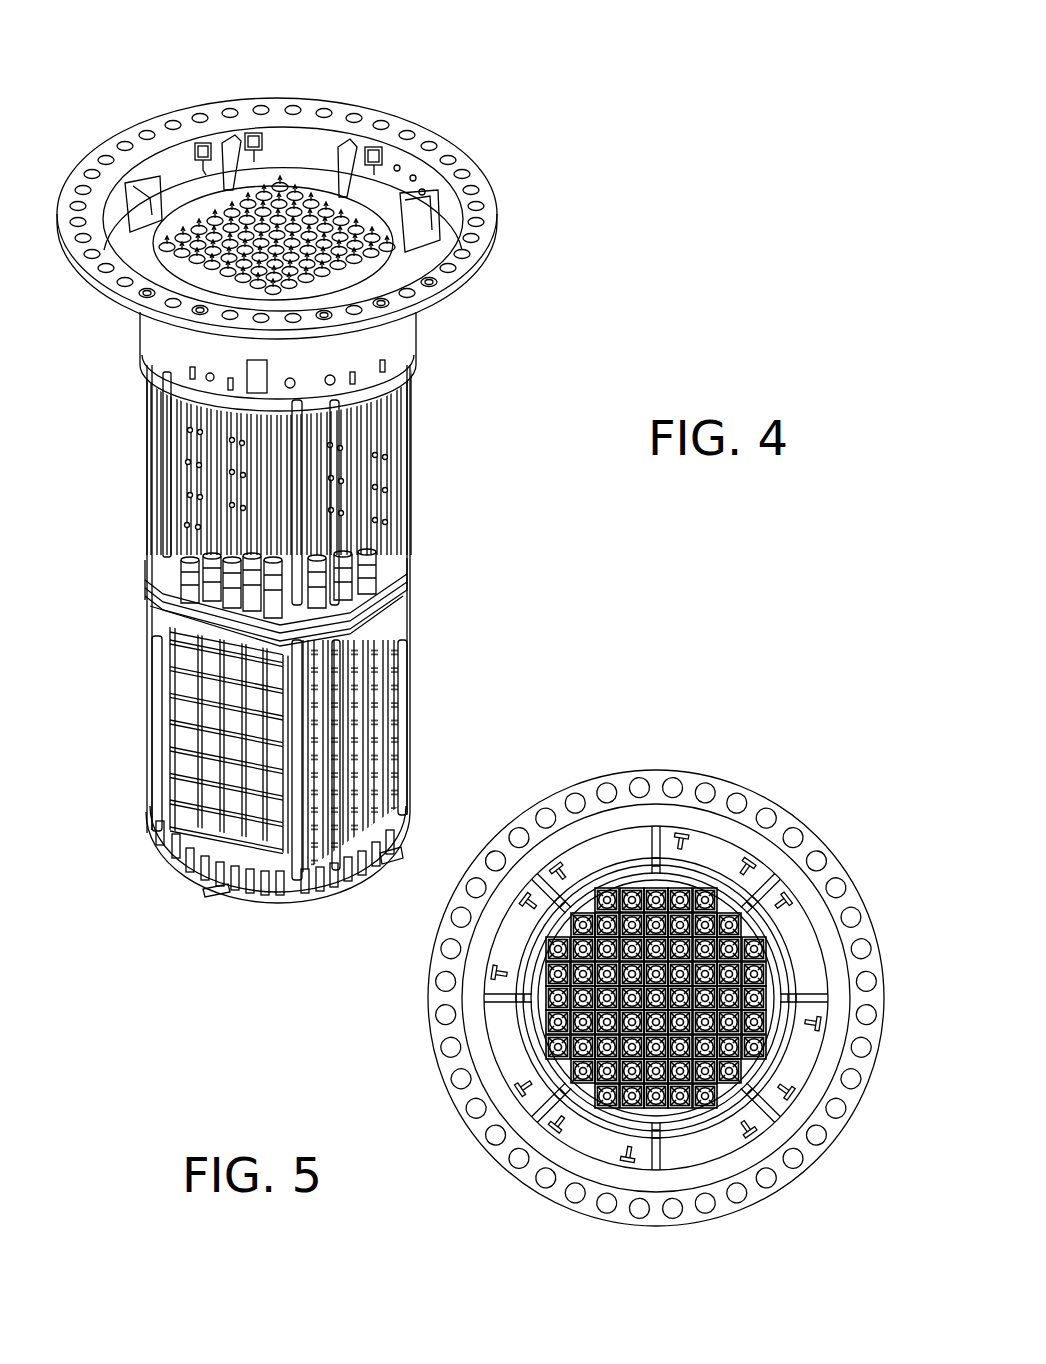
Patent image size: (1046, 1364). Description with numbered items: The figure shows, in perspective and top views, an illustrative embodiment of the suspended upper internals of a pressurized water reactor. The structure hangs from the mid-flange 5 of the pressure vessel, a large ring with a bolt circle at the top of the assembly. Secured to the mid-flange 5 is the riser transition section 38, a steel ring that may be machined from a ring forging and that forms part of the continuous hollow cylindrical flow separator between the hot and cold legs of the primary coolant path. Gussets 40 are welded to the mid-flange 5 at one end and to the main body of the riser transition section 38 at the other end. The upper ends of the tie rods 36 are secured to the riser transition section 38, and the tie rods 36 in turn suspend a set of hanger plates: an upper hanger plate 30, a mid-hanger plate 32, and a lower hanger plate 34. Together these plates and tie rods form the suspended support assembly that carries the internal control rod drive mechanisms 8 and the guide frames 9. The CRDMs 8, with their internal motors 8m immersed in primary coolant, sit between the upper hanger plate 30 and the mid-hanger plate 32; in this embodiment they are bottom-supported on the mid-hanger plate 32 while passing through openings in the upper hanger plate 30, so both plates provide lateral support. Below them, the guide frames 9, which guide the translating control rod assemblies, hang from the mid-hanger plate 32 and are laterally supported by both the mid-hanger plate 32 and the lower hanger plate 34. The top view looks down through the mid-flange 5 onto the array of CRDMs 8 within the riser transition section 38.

In FIG. 4, the mid-flange 5 is at (478, 170).
In FIG. 5, the mid-flange 5 is at (841, 864).
In FIG. 4, the internal control rod drive mechanism 8 is at (372, 462).
In FIG. 5, the internal control rod drive mechanism 8 is at (557, 1037).
In FIG. 4, the internal motor 8m is at (403, 578).
In FIG. 4, the guide frame 9 is at (393, 730).
In FIG. 4, the upper hanger plate 30 is at (347, 401).
In FIG. 5, the upper hanger plate 30 is at (535, 978).
In FIG. 4, the mid-hanger plate 32 is at (390, 600).
In FIG. 4, the lower hanger plate 34 is at (277, 898).
In FIG. 4, the tie rod 36 is at (297, 500).
In FIG. 4, the riser transition section 38 is at (393, 367).
In FIG. 5, the riser transition section 38 is at (525, 933).
In FIG. 4, the gusset 40 is at (330, 177).
In FIG. 5, the gusset 40 is at (655, 843).